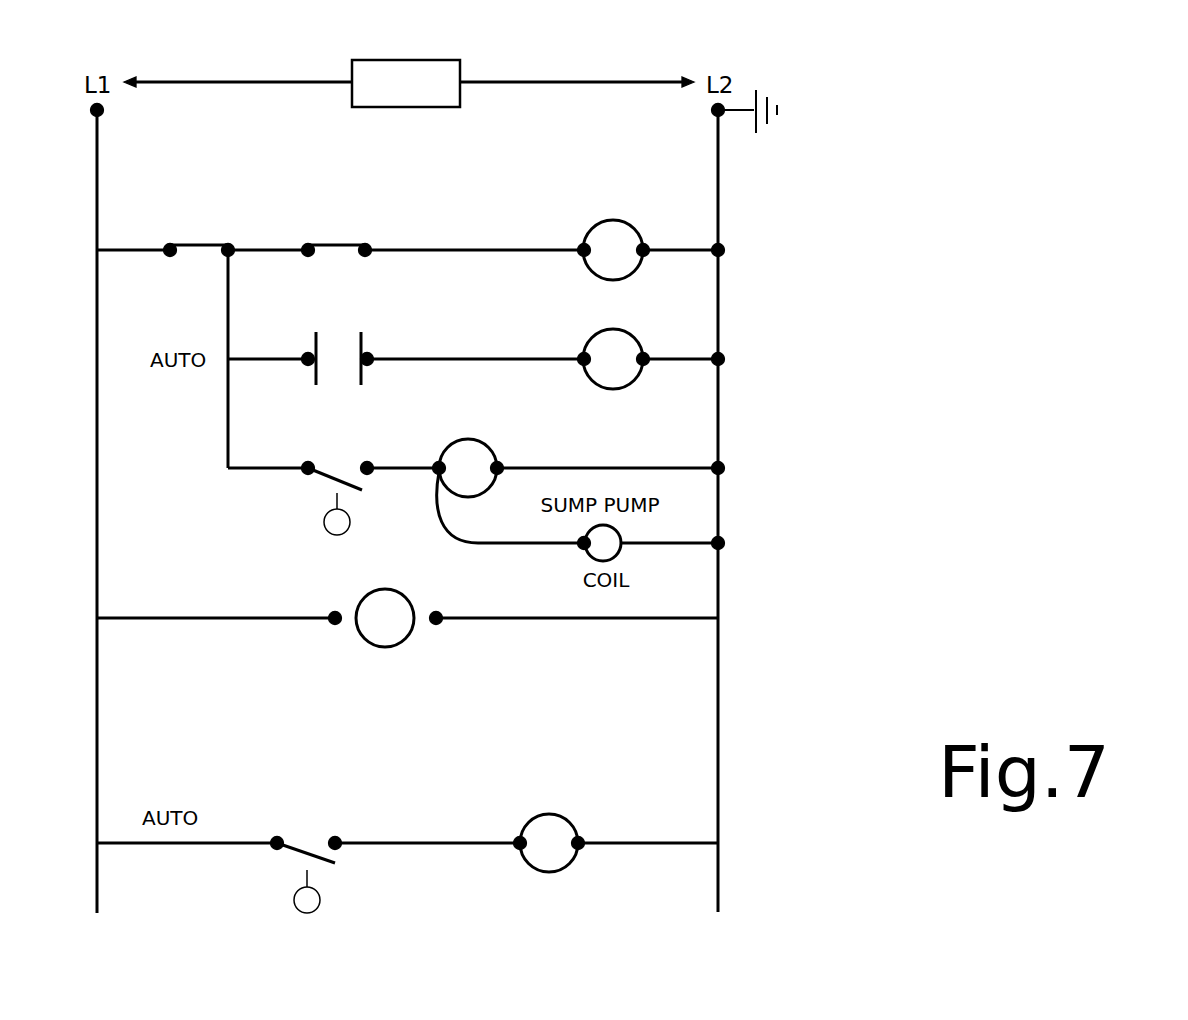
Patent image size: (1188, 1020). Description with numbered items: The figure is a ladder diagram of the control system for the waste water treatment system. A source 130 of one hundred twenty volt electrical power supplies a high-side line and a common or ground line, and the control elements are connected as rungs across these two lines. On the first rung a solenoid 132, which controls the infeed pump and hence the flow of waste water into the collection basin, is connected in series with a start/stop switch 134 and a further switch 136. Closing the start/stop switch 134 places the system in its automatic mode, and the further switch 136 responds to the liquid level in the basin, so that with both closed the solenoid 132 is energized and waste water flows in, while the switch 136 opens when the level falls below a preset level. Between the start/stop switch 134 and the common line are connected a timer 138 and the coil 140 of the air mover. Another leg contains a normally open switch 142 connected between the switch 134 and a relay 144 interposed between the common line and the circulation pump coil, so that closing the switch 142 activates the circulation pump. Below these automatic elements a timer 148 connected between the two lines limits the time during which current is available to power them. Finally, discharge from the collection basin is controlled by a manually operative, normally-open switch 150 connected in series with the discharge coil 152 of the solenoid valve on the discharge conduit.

The source of electrical power 130 is at (432, 60).
The solenoid 132 is at (590, 231).
The start/stop switch 134 is at (200, 245).
The further switch 136 is at (338, 245).
The timer 138 is at (338, 345).
The coil of the air mover 140 is at (617, 388).
The normally open switch 142 is at (350, 487).
The relay 144 is at (458, 440).
The timer TI 148 is at (388, 647).
The normally-open switch 150 is at (322, 860).
The discharge coil 152 is at (568, 822).